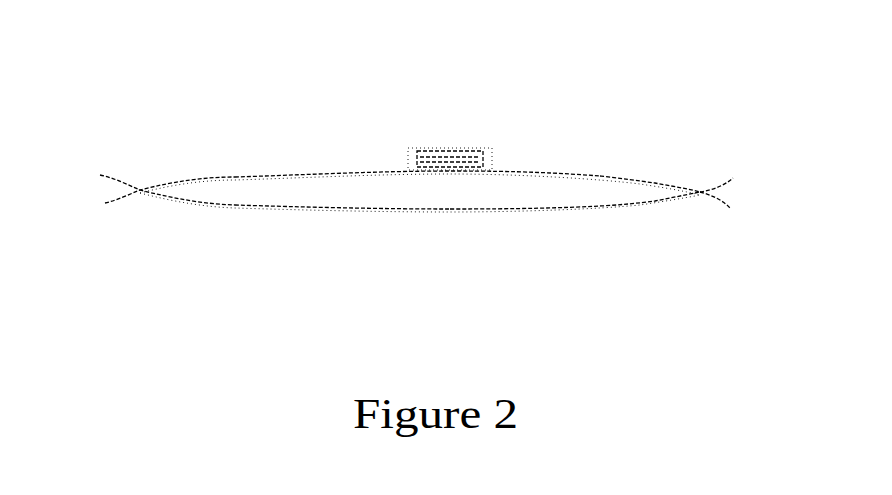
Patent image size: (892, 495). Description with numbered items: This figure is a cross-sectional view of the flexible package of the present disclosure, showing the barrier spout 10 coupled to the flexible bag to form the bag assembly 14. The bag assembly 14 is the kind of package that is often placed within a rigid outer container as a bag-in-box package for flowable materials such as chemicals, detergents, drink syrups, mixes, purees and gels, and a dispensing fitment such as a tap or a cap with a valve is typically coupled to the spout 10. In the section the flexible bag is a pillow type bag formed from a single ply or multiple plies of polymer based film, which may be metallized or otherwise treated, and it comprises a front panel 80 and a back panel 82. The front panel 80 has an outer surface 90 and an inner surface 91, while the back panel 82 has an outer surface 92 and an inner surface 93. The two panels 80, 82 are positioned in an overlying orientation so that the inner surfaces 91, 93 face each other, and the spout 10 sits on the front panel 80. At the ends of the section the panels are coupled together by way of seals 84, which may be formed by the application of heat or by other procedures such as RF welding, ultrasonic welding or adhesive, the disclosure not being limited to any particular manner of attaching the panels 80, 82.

The bag assembly 14 is at (273, 109).
The barrier spout 10 is at (516, 145).
The outer surface 90 is at (247, 165).
The inner surface 91 is at (223, 192).
The outer surface 92 is at (379, 224).
The inner surface 93 is at (444, 221).
The front panel 80 is at (658, 172).
The back panel 82 is at (618, 222).
The seals 84 is at (705, 209).